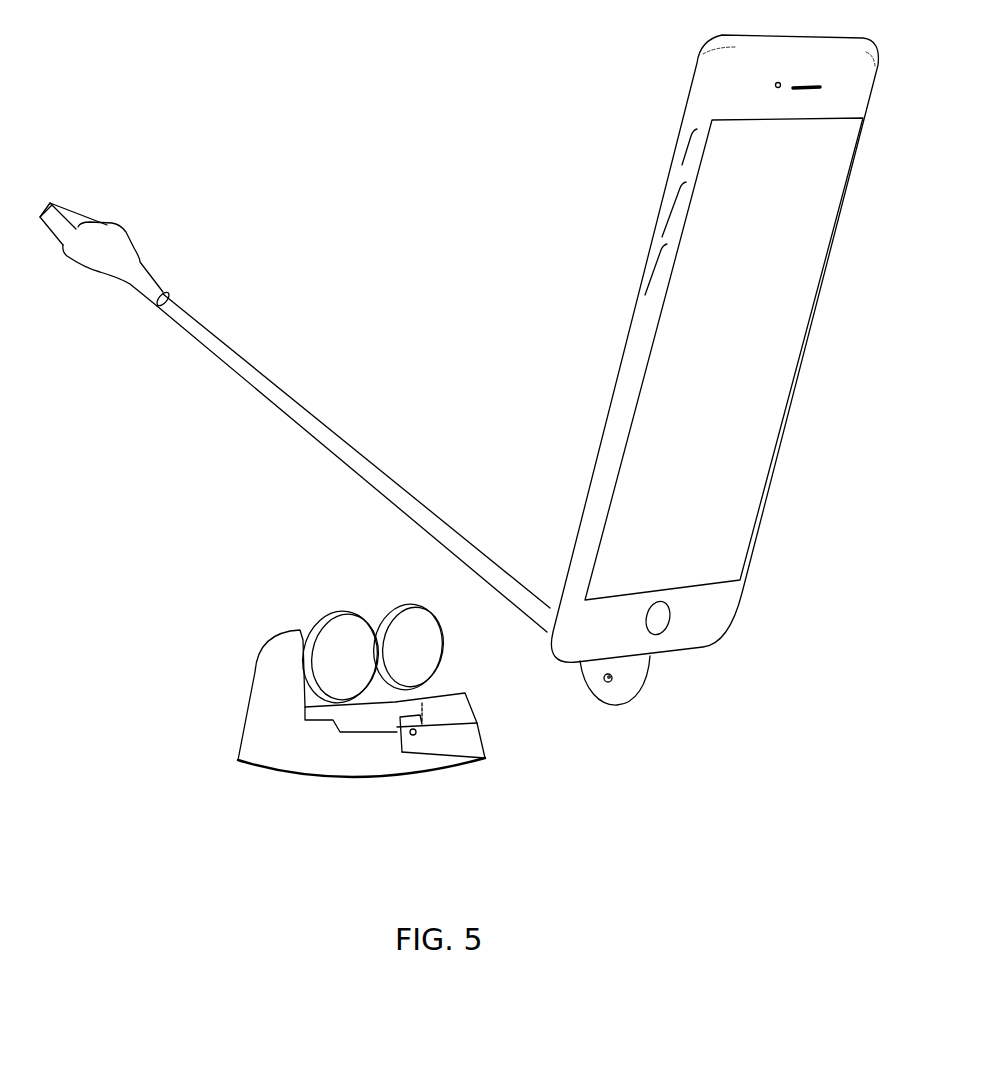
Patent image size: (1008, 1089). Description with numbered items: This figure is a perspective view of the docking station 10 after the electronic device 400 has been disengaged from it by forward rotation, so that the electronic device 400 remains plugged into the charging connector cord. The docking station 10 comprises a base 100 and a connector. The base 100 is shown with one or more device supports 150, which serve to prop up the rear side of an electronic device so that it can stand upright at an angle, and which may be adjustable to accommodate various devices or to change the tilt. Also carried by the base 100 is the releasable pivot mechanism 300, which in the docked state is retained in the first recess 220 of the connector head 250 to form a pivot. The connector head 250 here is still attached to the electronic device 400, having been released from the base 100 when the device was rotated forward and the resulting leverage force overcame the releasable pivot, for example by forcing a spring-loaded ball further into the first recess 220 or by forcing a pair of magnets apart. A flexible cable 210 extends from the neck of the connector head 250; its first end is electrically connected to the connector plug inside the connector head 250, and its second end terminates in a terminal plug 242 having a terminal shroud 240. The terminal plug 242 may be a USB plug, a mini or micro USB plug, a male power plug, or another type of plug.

The docking station 10 is at (191, 141).
The base 100 is at (282, 742).
The device supports 150 is at (342, 637).
The flexible cable 210 is at (322, 429).
The first recess 220 is at (606, 682).
The terminal shroud 240 is at (122, 243).
The terminal plug 242 is at (79, 209).
The connector head 250 is at (630, 677).
The releasable pivot mechanism 300 is at (415, 735).
The electronic device 400 is at (812, 265).